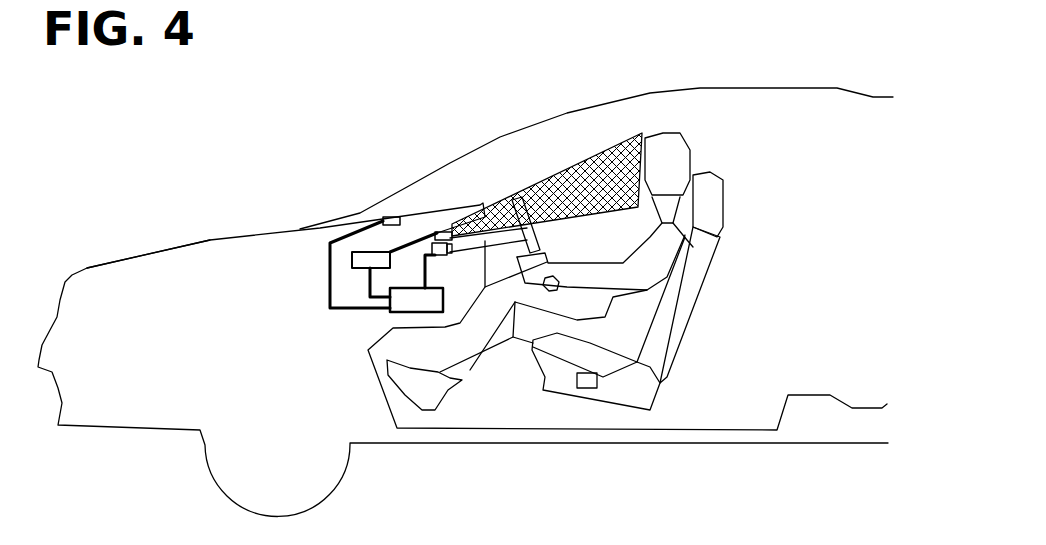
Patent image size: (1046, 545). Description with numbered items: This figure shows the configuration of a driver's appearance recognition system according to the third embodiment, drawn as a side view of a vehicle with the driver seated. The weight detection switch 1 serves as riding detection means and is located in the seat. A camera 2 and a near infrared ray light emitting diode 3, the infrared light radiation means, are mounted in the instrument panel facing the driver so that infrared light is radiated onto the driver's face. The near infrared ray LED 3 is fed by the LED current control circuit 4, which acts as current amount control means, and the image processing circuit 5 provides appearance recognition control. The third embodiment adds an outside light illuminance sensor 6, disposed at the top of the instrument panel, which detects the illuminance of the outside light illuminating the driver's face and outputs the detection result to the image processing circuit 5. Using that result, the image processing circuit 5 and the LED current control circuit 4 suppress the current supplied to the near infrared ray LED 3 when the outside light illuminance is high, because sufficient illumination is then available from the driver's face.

The weight detection switch 1 is at (590, 390).
The camera 2 is at (450, 255).
The near infrared ray light emitting diode 3 is at (443, 233).
The near infrared ray light emitting diode's current control circuit 4 is at (358, 254).
The image processing circuit 5 is at (393, 313).
The outside light illuminance sensor 6 is at (389, 217).